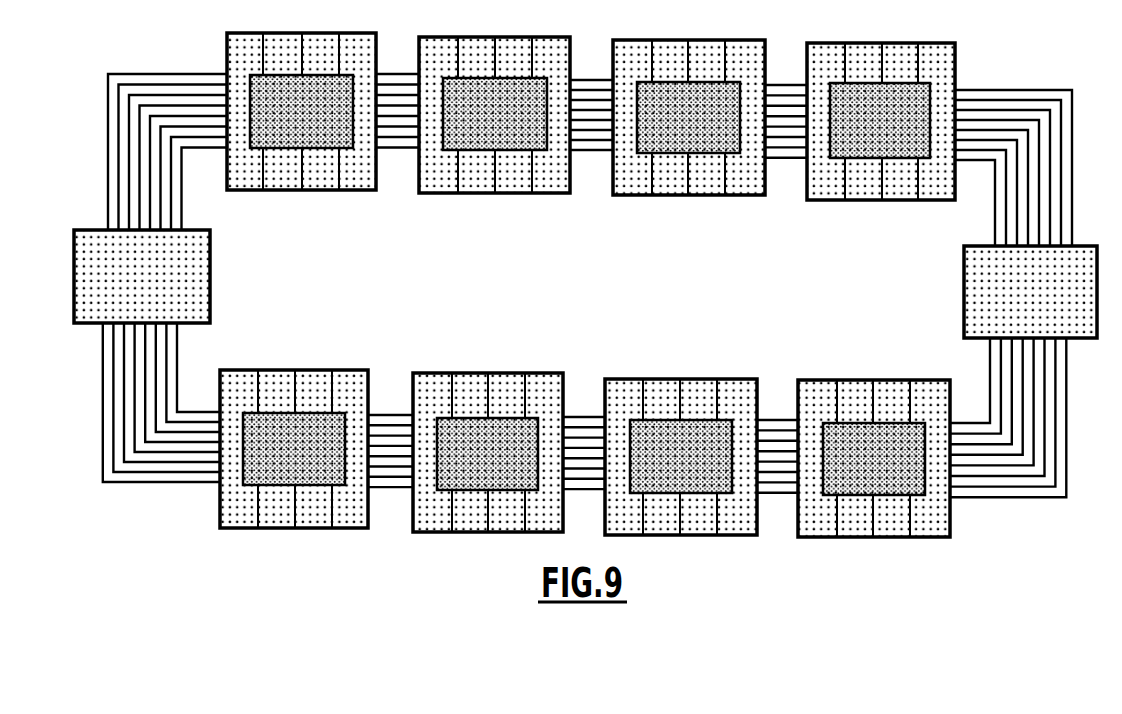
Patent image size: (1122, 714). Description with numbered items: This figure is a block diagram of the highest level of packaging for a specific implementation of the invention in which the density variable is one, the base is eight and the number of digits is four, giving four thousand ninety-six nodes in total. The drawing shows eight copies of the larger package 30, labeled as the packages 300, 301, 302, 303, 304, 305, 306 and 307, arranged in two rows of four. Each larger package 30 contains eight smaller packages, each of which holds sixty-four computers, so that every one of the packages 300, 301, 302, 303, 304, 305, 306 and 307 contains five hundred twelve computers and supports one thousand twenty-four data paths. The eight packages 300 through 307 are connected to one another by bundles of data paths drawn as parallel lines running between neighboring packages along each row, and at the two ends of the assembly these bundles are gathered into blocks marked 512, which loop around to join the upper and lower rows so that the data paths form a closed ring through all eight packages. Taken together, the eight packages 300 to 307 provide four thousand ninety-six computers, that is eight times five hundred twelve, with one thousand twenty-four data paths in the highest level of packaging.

The larger package 30 is at (301, 141).
The package 300 is at (852, 201).
The package 301 is at (657, 196).
The package 302 is at (465, 194).
The package 303 is at (272, 191).
The package 304 is at (268, 369).
The package 305 is at (460, 372).
The package 306 is at (653, 378).
The package 307 is at (848, 379).
The memory block (512 words) 512 is at (585, 284).